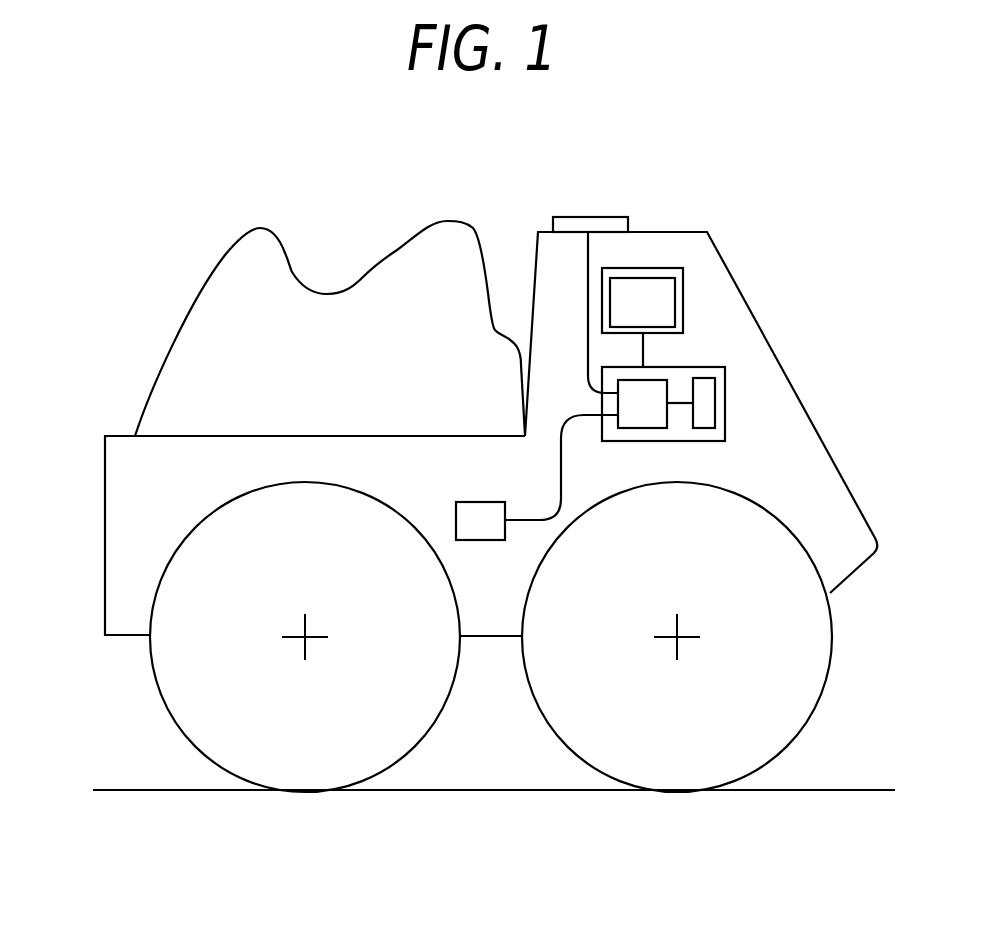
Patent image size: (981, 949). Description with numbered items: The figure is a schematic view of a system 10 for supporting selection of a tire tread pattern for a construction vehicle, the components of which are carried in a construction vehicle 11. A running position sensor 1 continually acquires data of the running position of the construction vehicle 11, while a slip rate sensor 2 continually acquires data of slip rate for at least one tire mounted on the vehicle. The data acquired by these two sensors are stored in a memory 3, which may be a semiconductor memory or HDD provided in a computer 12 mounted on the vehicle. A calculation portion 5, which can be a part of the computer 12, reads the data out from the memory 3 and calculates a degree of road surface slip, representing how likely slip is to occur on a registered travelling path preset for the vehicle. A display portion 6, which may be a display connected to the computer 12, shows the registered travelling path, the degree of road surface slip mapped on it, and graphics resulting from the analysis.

The running position sensor 1 is at (590, 222).
The slip rate sensor 2 is at (488, 532).
The memory 3 is at (642, 415).
The calculation portion 5 is at (707, 408).
The display portion 6 is at (636, 267).
The system for supporting selection of a tire tread pattern 10 is at (703, 201).
The construction vehicle 11 is at (105, 497).
The computer 12 is at (738, 382).